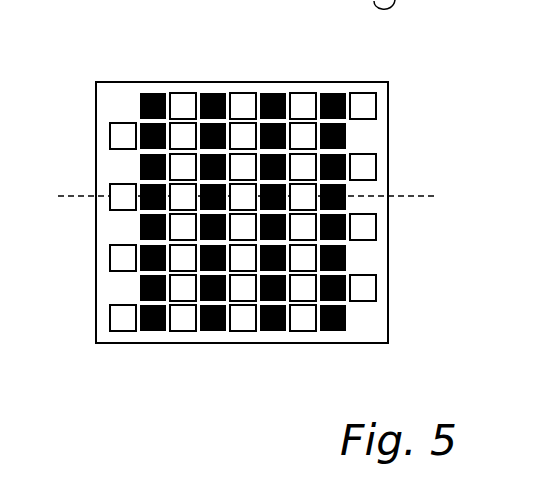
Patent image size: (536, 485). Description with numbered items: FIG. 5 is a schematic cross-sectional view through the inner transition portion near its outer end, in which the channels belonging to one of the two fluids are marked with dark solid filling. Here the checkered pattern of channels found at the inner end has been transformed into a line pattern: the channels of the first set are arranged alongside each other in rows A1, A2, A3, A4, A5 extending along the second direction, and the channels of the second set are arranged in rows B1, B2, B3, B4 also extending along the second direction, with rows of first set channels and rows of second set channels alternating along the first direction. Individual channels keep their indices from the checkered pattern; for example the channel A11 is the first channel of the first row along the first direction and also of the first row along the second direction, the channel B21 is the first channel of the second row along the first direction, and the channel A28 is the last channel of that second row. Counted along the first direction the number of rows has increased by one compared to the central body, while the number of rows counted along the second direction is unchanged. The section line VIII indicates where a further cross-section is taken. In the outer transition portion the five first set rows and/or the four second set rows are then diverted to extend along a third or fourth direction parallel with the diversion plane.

The row of second set channels B1 is at (104, 170).
The row of second set channels B2 is at (214, 170).
The row of second set channels B3 is at (274, 170).
The row of second set channels B4 is at (334, 170).
The row of first set channels A1 is at (83, 271).
The row of first set channels A2 is at (173, 381).
The row of first set channels A3 is at (233, 381).
The row of first set channels A4 is at (293, 381).
The row of first set channels A5 is at (399, 256).
The channel B21 is at (142, 284).
The channel A11 is at (117, 322).
The channel A28 is at (365, 288).
The section line VIII- VIII is at (477, 258).